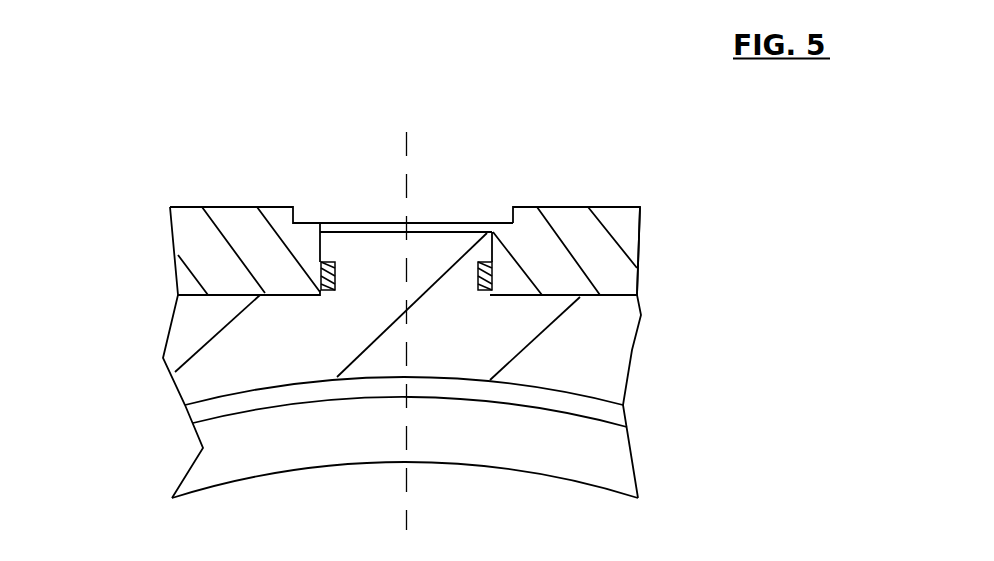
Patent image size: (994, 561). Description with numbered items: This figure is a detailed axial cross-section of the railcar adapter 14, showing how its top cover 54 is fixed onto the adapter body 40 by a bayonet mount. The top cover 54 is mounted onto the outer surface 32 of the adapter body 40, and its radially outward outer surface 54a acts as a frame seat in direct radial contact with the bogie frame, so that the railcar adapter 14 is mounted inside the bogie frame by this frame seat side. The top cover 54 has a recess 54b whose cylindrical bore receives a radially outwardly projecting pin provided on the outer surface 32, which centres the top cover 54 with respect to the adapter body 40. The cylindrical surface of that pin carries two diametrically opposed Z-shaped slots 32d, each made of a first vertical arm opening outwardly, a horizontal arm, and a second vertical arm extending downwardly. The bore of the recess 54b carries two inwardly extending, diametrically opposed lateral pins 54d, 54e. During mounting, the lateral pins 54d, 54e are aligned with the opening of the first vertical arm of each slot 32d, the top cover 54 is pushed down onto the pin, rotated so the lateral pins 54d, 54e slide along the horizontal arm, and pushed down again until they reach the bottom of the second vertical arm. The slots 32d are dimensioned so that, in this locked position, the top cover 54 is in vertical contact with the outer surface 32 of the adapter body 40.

The railcar adapter 14 is at (146, 218).
The outer surface 32 is at (587, 293).
The Z-shaped slot 32d is at (477, 271).
The adapter body 40 is at (194, 290).
The top cover 54 is at (247, 207).
The outer surface 54a is at (623, 207).
The recess 54b is at (473, 222).
The lateral pin 54d is at (480, 290).
The lateral pin 54e is at (333, 290).